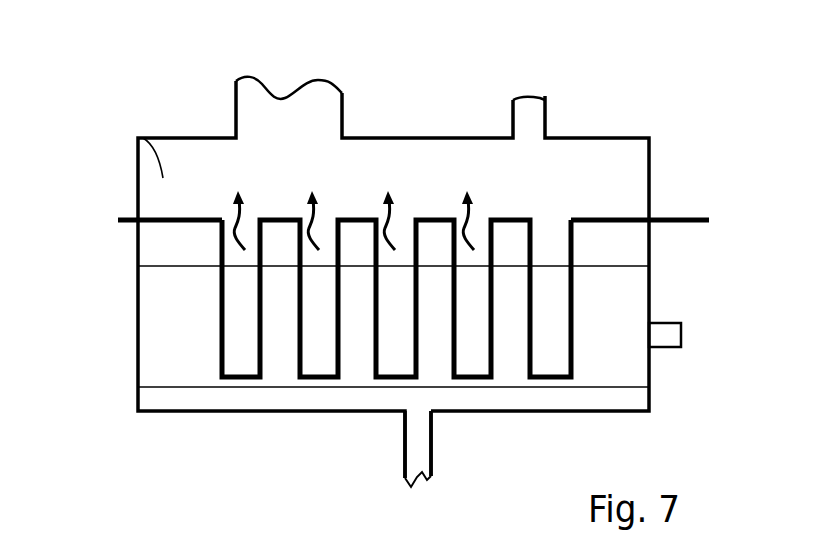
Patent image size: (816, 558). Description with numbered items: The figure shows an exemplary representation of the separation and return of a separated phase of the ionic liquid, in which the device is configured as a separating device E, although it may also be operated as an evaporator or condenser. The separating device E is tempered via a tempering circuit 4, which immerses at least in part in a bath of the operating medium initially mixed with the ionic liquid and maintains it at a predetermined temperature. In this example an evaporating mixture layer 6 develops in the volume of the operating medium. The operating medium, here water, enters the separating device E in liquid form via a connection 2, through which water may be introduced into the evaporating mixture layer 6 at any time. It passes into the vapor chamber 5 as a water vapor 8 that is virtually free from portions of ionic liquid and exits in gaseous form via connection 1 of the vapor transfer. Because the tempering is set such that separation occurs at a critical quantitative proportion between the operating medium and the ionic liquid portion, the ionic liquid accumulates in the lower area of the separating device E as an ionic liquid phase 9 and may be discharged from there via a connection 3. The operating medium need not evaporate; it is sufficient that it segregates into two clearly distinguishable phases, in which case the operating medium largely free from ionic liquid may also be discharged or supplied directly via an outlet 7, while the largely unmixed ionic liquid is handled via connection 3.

The separating device E is at (166, 64).
The connection 1 is at (336, 105).
The connection 2 is at (536, 118).
The connection 3 is at (417, 461).
The tempering circuit 4 is at (147, 223).
The vapor chamber 5 is at (137, 138).
The evaporating mixture layer 6 is at (620, 299).
The outlet 7 is at (655, 338).
The water vapor 8 is at (242, 246).
The ionic liquid phase 9 is at (621, 403).